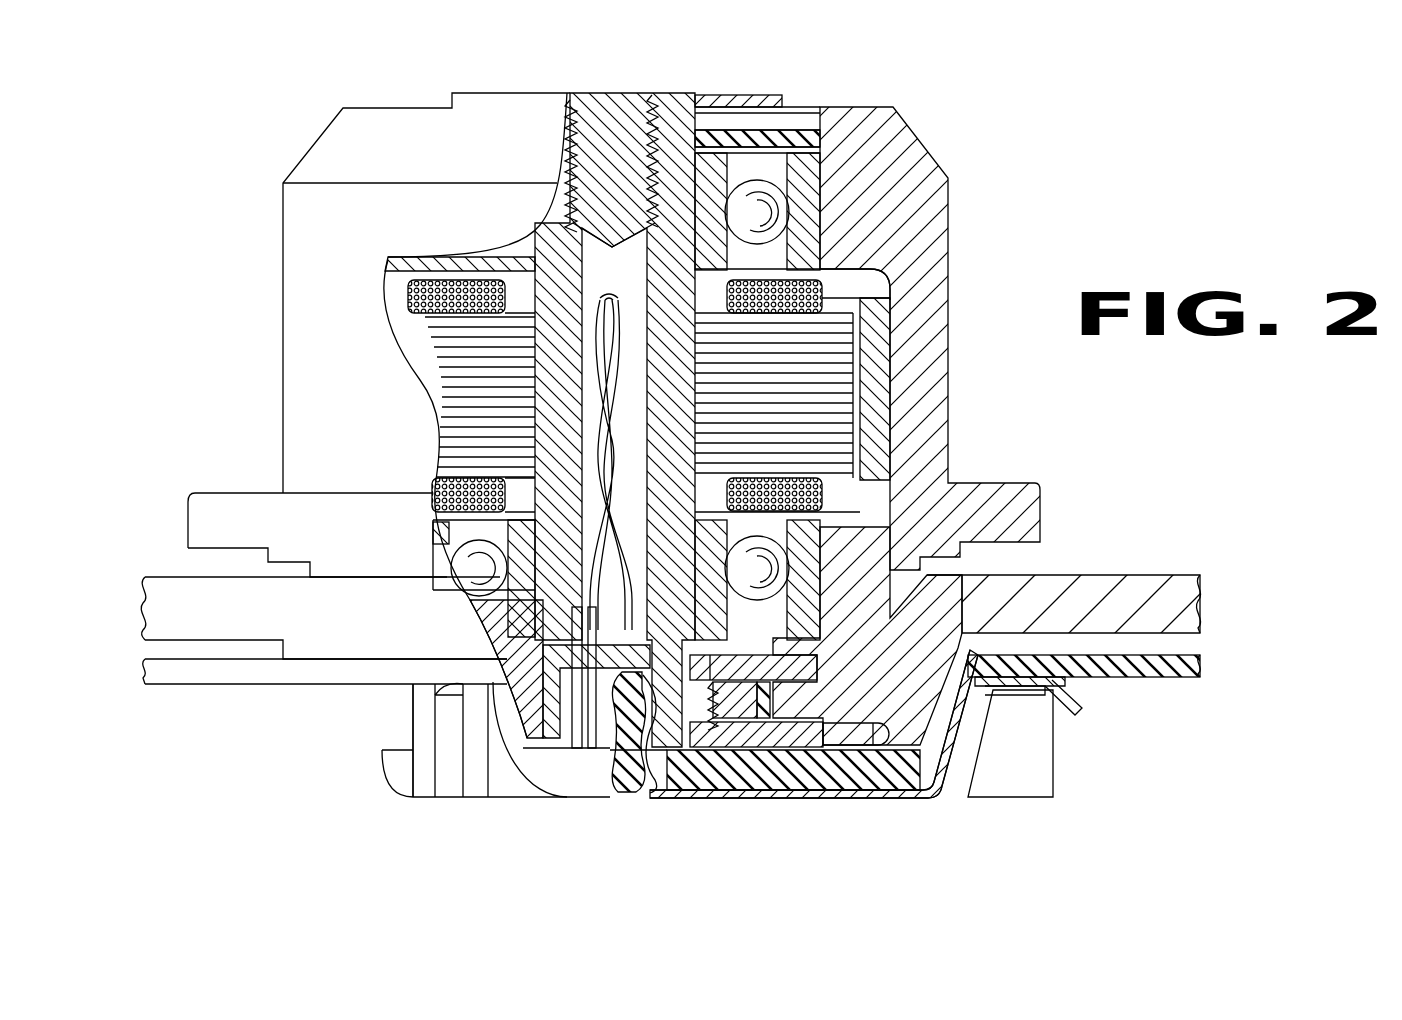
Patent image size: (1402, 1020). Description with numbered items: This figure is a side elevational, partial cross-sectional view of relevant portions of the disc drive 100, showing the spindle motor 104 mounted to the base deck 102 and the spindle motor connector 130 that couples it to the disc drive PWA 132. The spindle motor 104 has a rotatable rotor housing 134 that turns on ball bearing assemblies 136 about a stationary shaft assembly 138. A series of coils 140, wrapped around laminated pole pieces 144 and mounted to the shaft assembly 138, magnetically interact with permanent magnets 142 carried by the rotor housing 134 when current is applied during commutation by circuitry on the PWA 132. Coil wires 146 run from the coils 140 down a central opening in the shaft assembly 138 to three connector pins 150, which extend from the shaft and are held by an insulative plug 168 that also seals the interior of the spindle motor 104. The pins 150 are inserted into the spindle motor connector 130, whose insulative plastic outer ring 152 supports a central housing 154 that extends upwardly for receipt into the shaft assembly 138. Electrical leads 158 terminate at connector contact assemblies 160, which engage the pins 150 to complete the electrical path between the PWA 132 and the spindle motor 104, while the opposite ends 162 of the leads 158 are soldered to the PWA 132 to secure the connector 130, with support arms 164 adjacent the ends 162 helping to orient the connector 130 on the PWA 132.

The disc drive 100 is at (298, 113).
The base deck 102 is at (183, 598).
The spindle motor 104 is at (303, 263).
The spindle motor connector 130 is at (597, 820).
The PWA 132 is at (232, 670).
The rotor housing 134 is at (897, 178).
The ball bearing assemblies 136 is at (807, 168).
The shaft assembly 138 is at (603, 90).
The coils 140 is at (407, 280).
The permanent magnets 142 is at (875, 357).
The laminated pole pieces 144 is at (463, 395).
The coil wires 146 is at (600, 462).
The connector pins 150 is at (760, 795).
The outer ring 152 is at (562, 770).
The central housing 154 is at (613, 723).
The electrical leads 158 is at (898, 797).
The connector contact assemblies 160 is at (657, 790).
The ends 162 is at (453, 685).
The support arms 164 is at (425, 768).
The insulative plug 168 is at (703, 800).